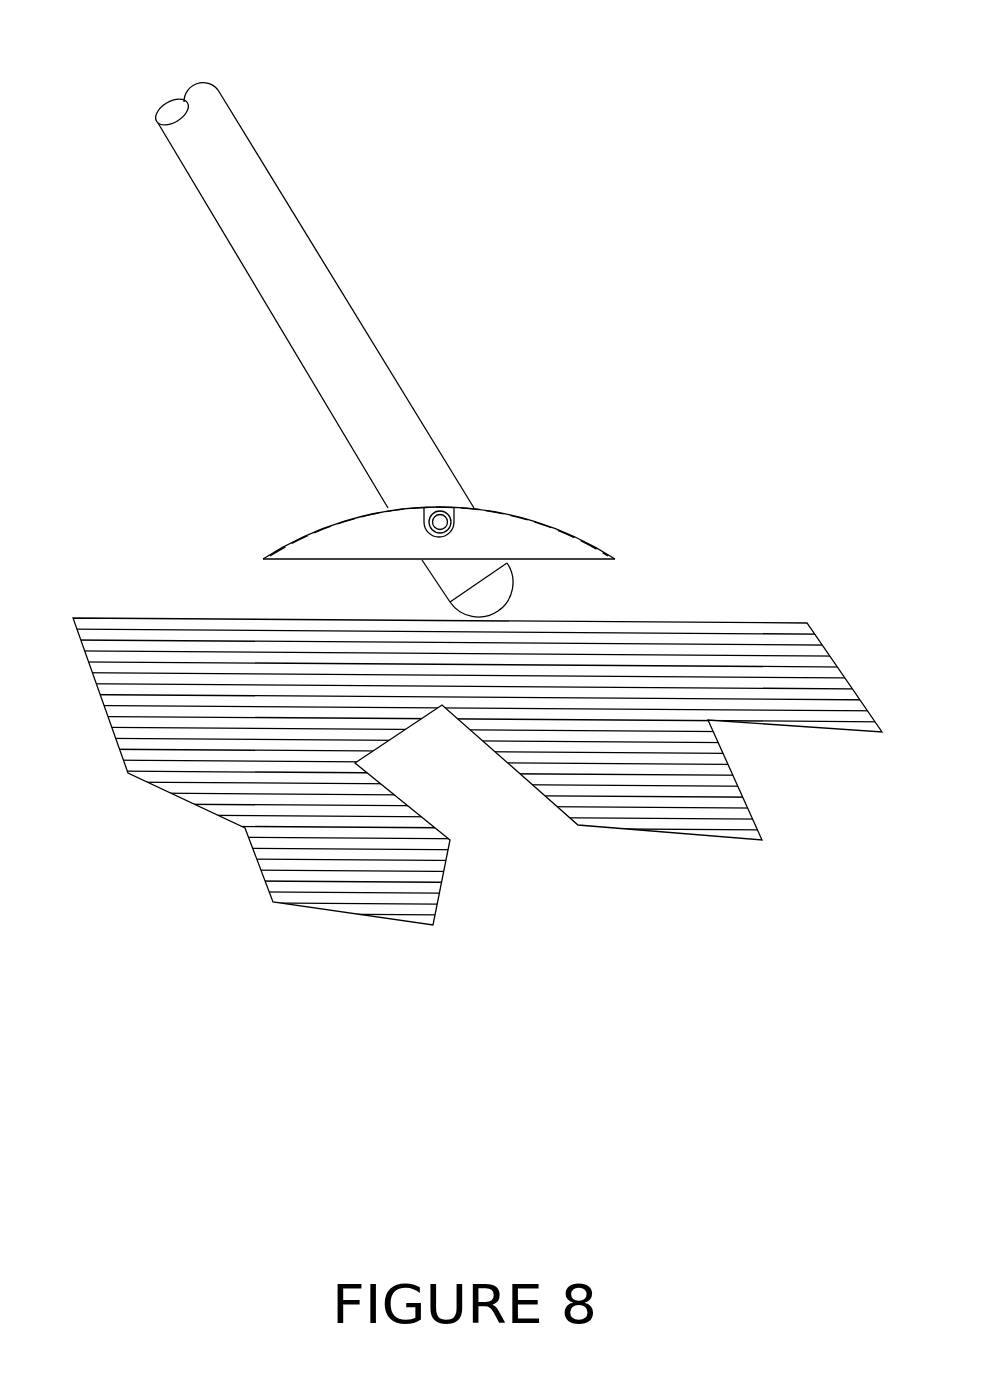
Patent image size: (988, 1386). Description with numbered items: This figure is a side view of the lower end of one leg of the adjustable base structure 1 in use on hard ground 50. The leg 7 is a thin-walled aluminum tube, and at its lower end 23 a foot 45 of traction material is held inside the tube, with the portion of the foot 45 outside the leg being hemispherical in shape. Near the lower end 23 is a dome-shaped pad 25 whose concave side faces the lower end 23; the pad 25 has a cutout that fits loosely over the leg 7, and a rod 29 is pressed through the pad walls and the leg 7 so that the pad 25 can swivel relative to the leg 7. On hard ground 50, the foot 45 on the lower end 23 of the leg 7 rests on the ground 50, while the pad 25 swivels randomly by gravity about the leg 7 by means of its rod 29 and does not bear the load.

The adjustable base structure 1 is at (253, 283).
The leg 7 is at (265, 165).
The lower end 23 is at (455, 573).
The pad 25 is at (593, 547).
The rod 29 is at (440, 511).
The foot 45 is at (478, 602).
The hard ground 50 is at (157, 617).